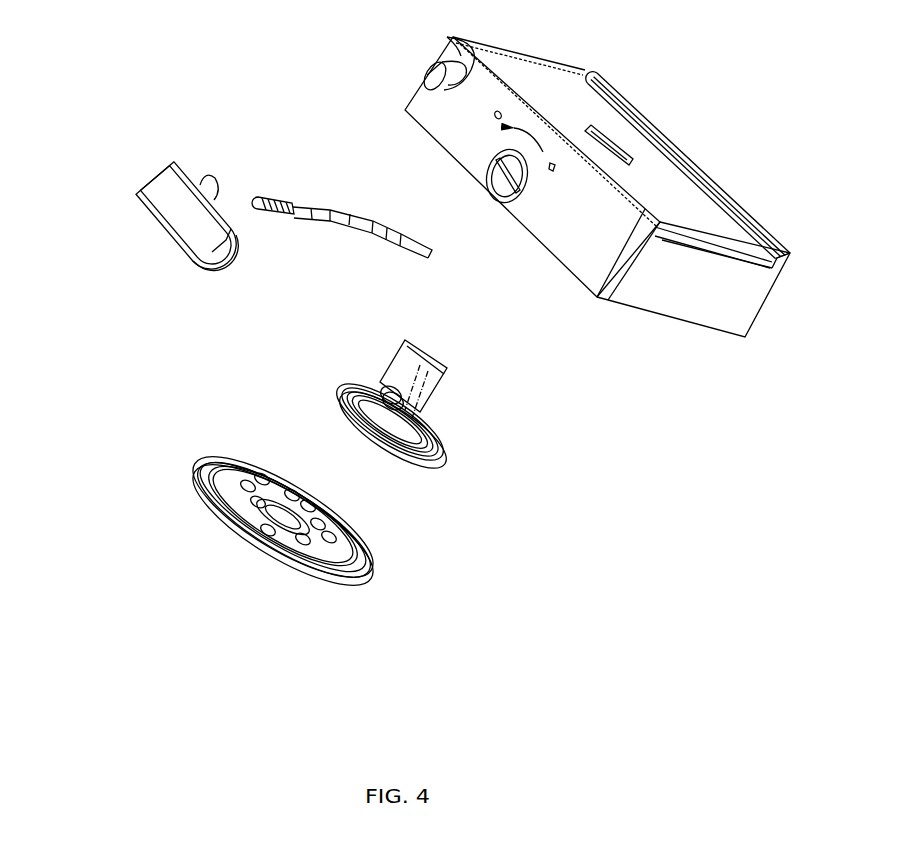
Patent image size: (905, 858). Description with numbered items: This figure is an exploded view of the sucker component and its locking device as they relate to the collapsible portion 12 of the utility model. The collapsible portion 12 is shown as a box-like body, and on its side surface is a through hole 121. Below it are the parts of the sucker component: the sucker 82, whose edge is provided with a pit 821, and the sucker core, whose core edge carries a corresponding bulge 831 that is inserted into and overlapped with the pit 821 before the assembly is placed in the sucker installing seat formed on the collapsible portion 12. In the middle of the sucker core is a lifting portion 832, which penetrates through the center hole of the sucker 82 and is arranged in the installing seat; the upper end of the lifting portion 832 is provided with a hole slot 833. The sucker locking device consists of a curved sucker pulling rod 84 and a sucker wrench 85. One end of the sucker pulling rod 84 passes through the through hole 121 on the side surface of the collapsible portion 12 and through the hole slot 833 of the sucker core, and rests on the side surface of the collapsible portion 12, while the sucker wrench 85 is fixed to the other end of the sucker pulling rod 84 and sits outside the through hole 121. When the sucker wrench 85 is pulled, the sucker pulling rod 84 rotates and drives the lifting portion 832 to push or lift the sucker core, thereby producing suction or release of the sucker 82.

The collapsible portion 12 is at (670, 283).
The through hole 121 is at (487, 163).
The sucker 82 is at (263, 525).
The pit 821 is at (323, 537).
The bulge 831 is at (440, 453).
The lifting portion 832 is at (427, 400).
The hole slot 833 is at (380, 385).
The sucker pulling rod 84 is at (325, 204).
The sucker wrench 85 is at (187, 223).